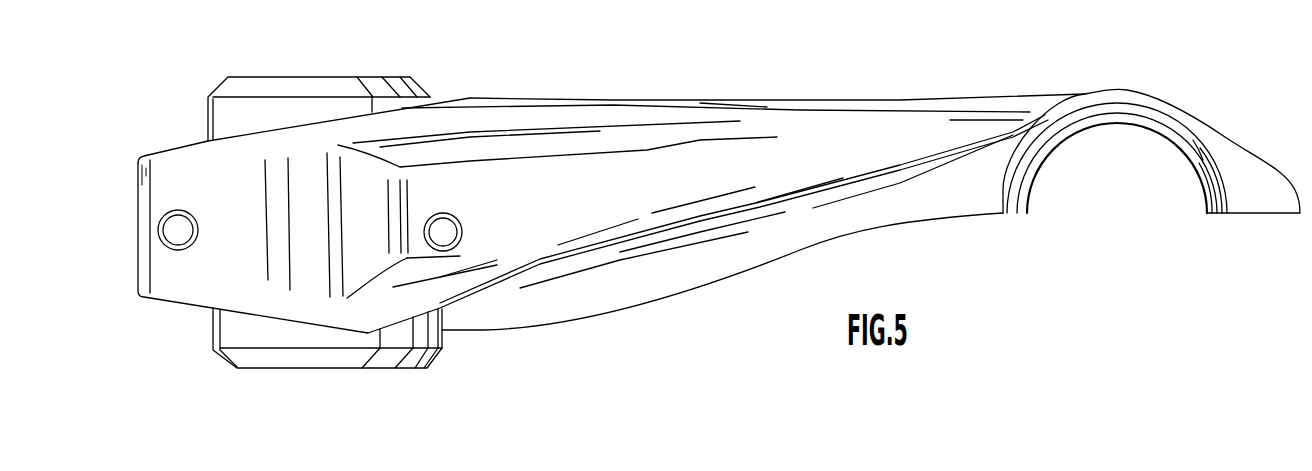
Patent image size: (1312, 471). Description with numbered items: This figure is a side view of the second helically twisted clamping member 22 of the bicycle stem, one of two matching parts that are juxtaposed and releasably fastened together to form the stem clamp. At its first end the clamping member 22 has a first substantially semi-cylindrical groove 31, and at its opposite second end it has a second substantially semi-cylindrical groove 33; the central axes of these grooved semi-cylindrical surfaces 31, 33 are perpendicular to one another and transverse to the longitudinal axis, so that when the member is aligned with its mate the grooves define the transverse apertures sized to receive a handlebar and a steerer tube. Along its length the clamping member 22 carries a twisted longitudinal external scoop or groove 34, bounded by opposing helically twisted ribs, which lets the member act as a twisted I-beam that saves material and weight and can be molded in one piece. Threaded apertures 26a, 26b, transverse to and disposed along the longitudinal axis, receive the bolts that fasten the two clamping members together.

The second helically twisted clamping member 22 is at (613, 100).
The threaded aperture 26a is at (177, 227).
The threaded aperture 26b is at (443, 235).
The first substantially semi-cylindrical groove 31 is at (327, 375).
The second substantially semi-cylindrical groove 33 is at (1115, 123).
The twisted longitudinal external scoop or groove 34 is at (720, 165).